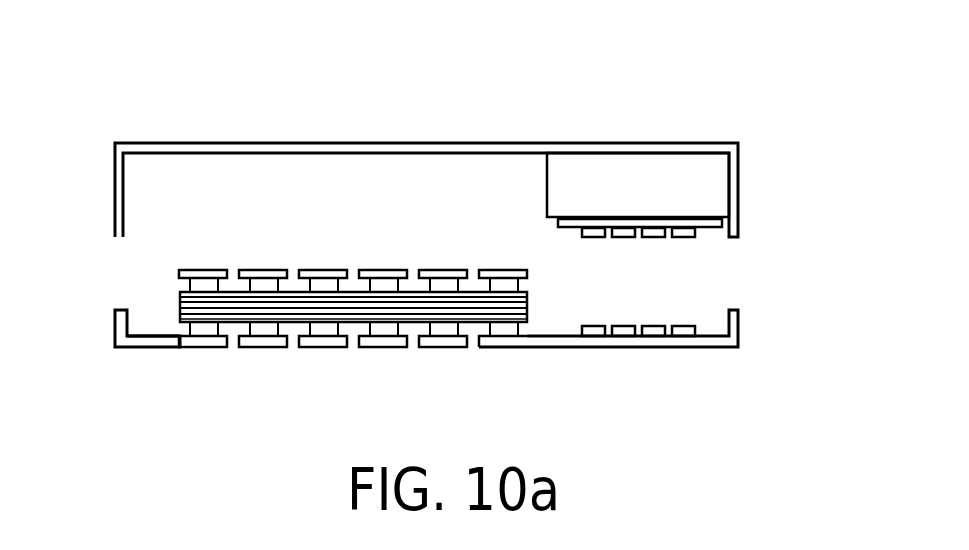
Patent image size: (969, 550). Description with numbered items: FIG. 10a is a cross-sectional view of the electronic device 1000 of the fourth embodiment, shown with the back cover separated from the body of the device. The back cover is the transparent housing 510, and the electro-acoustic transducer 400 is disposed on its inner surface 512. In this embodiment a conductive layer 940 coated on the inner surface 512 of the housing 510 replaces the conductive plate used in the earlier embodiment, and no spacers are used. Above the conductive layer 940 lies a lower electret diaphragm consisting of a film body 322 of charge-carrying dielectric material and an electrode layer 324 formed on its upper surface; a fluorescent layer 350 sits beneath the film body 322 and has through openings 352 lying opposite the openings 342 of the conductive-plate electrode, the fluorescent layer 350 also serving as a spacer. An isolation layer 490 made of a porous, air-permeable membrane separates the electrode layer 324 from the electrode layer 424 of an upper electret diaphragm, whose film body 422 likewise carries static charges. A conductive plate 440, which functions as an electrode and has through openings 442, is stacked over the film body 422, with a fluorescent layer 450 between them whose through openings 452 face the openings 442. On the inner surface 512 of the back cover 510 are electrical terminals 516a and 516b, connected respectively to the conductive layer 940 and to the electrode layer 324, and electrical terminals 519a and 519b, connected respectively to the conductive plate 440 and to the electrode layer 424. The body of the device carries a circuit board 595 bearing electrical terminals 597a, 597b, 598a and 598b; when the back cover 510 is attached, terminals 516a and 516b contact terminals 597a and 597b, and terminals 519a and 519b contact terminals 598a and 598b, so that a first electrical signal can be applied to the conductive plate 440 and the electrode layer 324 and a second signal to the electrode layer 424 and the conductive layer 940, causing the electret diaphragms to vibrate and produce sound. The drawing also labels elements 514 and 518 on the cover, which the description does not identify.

The electronic device 1000 is at (152, 118).
The electro-acoustic transducer 400 is at (378, 248).
The electrode layer 424 is at (181, 301).
The film body 422 is at (518, 293).
The isolation layer 490 is at (522, 306).
The electrode layer 324 is at (181, 313).
The film body 322 is at (514, 325).
The conductive plate 440 is at (180, 283).
The through openings 442 is at (233, 277).
The through openings 452 is at (472, 277).
The fluorescent layer 450 is at (188, 284).
The through openings 342 is at (233, 331).
The through openings 352 is at (468, 337).
The contact pad 514 is at (234, 338).
The contact pad 518 is at (383, 347).
The fluorescent layer 350 is at (533, 343).
The housing 510 is at (116, 320).
The conductive layer 940 is at (174, 336).
The inner surface 512 is at (713, 331).
The electrical terminal 516a is at (593, 330).
The electrical terminal 516b is at (621, 330).
The electrical terminal 519a is at (657, 330).
The electrical terminal 519b is at (686, 330).
The circuit board 595 is at (707, 224).
The electrical terminal 597a is at (595, 229).
The electrical terminal 597b is at (621, 229).
The electrical terminal 598a is at (651, 229).
The electrical terminal 598b is at (681, 229).